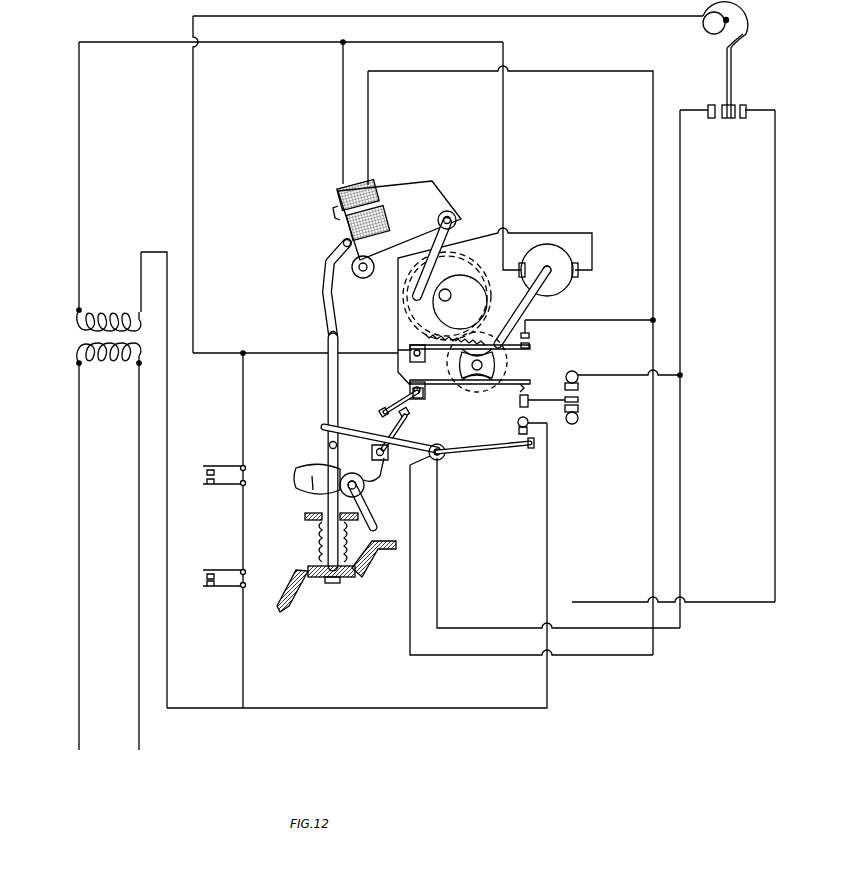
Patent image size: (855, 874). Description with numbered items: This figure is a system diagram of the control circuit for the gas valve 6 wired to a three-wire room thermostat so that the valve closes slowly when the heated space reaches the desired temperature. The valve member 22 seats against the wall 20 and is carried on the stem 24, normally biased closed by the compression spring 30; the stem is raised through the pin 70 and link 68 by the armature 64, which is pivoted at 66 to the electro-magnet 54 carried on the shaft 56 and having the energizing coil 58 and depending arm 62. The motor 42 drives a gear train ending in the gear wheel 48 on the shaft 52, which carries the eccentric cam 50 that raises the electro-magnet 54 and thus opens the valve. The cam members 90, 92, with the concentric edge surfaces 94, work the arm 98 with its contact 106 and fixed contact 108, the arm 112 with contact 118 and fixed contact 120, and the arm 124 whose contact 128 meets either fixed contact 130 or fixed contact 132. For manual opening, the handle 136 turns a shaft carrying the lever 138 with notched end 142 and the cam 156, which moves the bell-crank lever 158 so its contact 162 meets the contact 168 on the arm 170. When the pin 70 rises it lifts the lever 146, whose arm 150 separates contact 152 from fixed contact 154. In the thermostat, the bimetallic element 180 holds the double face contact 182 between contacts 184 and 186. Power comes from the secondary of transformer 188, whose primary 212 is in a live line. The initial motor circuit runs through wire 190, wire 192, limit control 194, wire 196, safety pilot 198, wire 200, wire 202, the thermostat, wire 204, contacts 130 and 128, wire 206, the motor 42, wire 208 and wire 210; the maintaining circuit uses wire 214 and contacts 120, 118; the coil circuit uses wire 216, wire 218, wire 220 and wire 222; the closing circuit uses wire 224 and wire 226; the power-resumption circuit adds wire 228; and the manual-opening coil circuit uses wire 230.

The valve 6 is at (296, 584).
The wall 20 is at (376, 561).
The valve member 22 is at (333, 584).
The stem 24 is at (327, 392).
The compression spring 30 is at (318, 534).
The electric motor 42 is at (562, 262).
The gear wheel 48 is at (486, 326).
The eccentric or cam member 50 is at (476, 305).
The shaft 52 is at (451, 292).
The electro-magnet 54 is at (431, 175).
The shaft 56 is at (453, 214).
The energizing coil 58 is at (369, 185).
The depending arm 62 is at (433, 268).
The armature 64 is at (336, 220).
The pivot 66 is at (363, 278).
The link 68 is at (327, 265).
The pin 70 is at (329, 445).
The cam member 90 is at (500, 360).
The cam member 92 is at (515, 378).
The concentric edge surfaces 94 is at (447, 366).
The arm 98 is at (426, 358).
The contact 106 is at (530, 345).
The fixed contact 108 is at (530, 334).
The arm 112 is at (528, 386).
The contact 118 is at (519, 400).
The fixed contact 120 is at (529, 403).
The arm 124 is at (456, 400).
The contact 128 is at (578, 397).
The fixed contact 130 is at (578, 410).
The fixed contact 132 is at (578, 383).
The handle 136 is at (376, 518).
The lever 138 is at (313, 478).
The notched end 142 is at (296, 471).
The lever 146 is at (363, 430).
The arm 150 is at (478, 448).
The contact 152 is at (533, 448).
The fixed contact 154 is at (518, 427).
The cam 156 is at (352, 468).
The bell-crank lever 158 is at (388, 452).
The contact 162 is at (395, 420).
The contact 168 is at (416, 409).
The arm 170 is at (401, 396).
The bimetallic element 180 is at (752, 22).
The double face contact 182 is at (730, 104).
The contact 184 is at (745, 104).
The contact 186 is at (711, 104).
The secondary of transformer 188 is at (78, 322).
The wire 190 is at (167, 441).
The wire 192 is at (152, 396).
The limit control 194 is at (204, 586).
The wire 196 is at (243, 541).
The safety pilot 198 is at (204, 483).
The wire 200 is at (243, 410).
The wire 202 is at (193, 200).
The wire 204 is at (753, 356).
The wire 206 is at (398, 330).
The wire 208 is at (503, 162).
The wire 210 is at (232, 44).
The primary 212 is at (78, 363).
The wire 214 is at (420, 708).
The wire 216 is at (343, 140).
The wire 218 is at (446, 78).
The wire 220 is at (597, 320).
The wire 222 is at (283, 356).
The wire 224 is at (680, 285).
The wire 226 is at (622, 372).
The wire 228 is at (680, 490).
The wire 230 is at (653, 655).